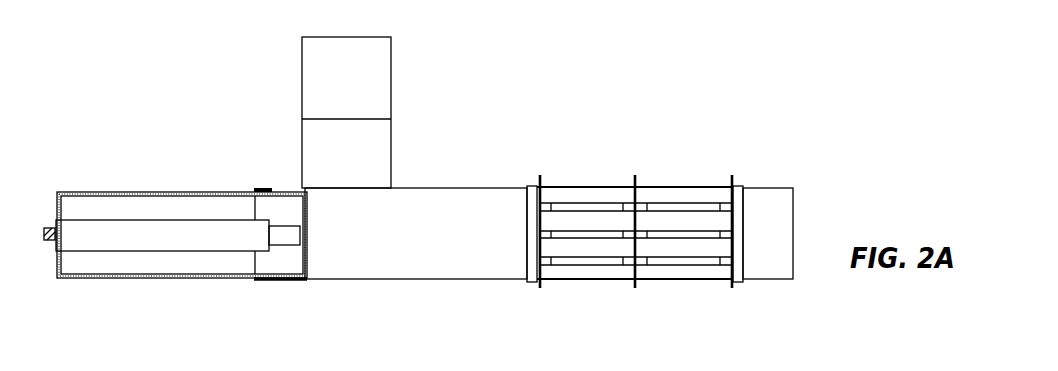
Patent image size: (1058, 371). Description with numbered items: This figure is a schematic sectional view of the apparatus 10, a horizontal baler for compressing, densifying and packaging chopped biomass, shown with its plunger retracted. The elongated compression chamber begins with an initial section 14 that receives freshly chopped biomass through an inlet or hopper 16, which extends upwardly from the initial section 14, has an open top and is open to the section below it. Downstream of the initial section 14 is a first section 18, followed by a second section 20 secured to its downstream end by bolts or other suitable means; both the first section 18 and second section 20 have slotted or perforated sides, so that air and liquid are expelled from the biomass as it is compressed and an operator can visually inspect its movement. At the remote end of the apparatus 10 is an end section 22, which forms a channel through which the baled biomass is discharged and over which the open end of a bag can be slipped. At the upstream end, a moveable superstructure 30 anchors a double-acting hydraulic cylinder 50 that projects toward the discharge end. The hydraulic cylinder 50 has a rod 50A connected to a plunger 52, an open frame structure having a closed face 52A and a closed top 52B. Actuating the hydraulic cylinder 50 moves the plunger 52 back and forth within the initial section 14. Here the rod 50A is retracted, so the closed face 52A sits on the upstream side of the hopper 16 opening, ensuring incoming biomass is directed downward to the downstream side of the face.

The apparatus 10 is at (645, 75).
The initial section 14 is at (386, 257).
The inlet or hopper 16 is at (375, 91).
The first section 18 is at (583, 186).
The second section 20 is at (682, 195).
The end section 22 is at (793, 220).
The superstructure 30 is at (49, 228).
The hydraulic cylinder 50 is at (133, 237).
The rod 50A is at (288, 233).
The plunger 52 is at (292, 294).
The closed face 52A is at (307, 208).
The closed top 52B is at (147, 190).